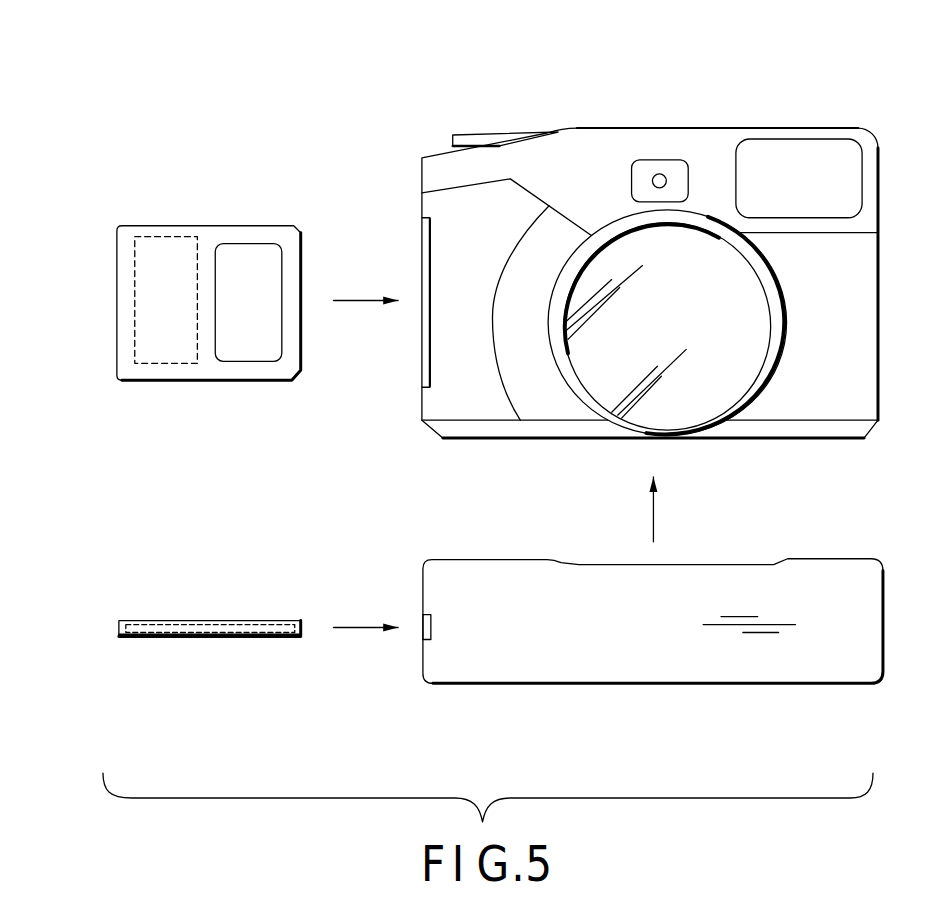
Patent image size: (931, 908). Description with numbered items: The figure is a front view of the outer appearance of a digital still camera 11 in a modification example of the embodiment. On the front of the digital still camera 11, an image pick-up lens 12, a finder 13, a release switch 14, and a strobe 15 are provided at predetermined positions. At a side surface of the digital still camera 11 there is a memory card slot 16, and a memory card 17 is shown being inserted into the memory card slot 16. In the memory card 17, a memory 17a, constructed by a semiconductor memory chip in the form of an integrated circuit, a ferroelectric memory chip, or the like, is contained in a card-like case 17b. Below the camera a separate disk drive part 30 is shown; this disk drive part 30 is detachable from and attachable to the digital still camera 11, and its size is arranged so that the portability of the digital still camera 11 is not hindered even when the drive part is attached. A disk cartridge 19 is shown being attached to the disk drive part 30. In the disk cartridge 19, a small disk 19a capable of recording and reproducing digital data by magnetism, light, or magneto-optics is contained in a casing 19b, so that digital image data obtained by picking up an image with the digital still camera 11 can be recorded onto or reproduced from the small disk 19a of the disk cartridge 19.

The digital still camera 11 is at (588, 87).
The image pick-up lens 12 is at (760, 327).
The finder 13 is at (653, 162).
The release switch 14 is at (470, 130).
The strobe 15 is at (800, 145).
The memory card slot 16 is at (417, 243).
The memory card 17 is at (97, 298).
The memory 17a is at (165, 231).
The card-like case 17b is at (247, 222).
The disk cartridge 19 is at (97, 627).
The small disk 19a is at (208, 622).
The casing 19b is at (153, 636).
The disk drive part 30 is at (650, 683).